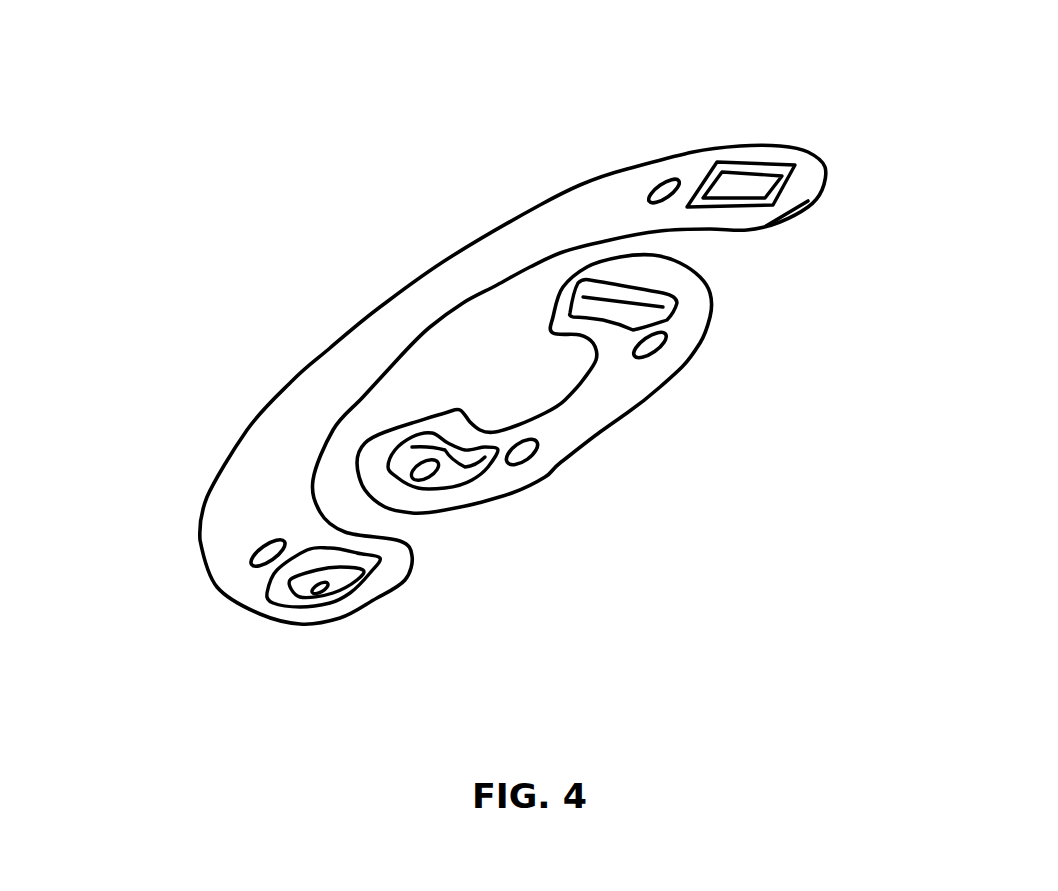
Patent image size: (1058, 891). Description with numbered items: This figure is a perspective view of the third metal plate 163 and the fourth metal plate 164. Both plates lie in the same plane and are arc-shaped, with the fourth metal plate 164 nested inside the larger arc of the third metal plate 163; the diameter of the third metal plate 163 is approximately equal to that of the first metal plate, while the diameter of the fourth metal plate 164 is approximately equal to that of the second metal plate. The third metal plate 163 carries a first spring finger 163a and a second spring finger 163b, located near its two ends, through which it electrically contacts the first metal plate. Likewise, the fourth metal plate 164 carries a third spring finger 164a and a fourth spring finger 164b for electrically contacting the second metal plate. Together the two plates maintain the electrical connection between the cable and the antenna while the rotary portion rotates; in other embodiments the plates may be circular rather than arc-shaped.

The third metal plate 163 is at (273, 443).
The first spring finger 163a is at (270, 586).
The second spring finger 163b is at (743, 200).
The fourth metal plate 164 is at (857, 393).
The third spring finger 164a is at (530, 553).
The fourth spring finger 164b is at (792, 290).